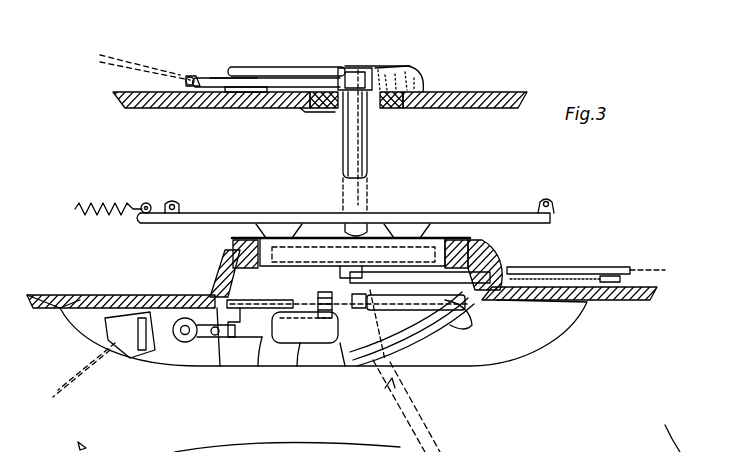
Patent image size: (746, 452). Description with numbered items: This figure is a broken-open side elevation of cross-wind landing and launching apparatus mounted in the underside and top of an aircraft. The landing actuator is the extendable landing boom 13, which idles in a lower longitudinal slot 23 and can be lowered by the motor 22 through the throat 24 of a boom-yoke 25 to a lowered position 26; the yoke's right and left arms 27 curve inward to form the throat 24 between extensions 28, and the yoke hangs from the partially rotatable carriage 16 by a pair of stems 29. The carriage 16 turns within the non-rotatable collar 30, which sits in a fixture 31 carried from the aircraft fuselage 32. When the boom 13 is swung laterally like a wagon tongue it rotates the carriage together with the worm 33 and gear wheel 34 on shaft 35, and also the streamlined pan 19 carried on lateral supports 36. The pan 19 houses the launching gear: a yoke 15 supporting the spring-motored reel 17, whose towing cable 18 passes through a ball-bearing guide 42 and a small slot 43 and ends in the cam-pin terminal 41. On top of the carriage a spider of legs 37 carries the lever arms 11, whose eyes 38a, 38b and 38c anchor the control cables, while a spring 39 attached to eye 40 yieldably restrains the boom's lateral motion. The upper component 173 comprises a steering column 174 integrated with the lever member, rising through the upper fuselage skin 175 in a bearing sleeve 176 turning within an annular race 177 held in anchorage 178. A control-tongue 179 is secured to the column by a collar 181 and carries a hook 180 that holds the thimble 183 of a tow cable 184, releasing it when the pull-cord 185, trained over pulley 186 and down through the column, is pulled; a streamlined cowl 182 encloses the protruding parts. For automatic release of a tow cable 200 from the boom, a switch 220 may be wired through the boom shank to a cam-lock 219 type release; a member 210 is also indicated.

The lever arm 11 is at (508, 215).
The landing boom 13 is at (560, 272).
The yoke 15 is at (263, 323).
The carriage 16 is at (390, 238).
The reel 17 is at (160, 338).
The towing cable 18 is at (177, 277).
The pan 19 is at (537, 328).
The motor 22 is at (307, 347).
The lower longitudinal slot 23 is at (583, 272).
The throat 24 is at (453, 317).
The boom-yoke 25 is at (450, 340).
The lowered boom position 26 is at (407, 413).
The yoke arms 27 is at (410, 357).
The yoke extensions 28 is at (407, 347).
The stems 29 is at (370, 297).
The collar 30 is at (233, 247).
The fixture 31 is at (487, 253).
The aircraft fuselage 32 is at (87, 293).
The worm 33 is at (328, 318).
The gear wheel 34 is at (340, 277).
The shaft 35 is at (268, 318).
The lateral supports 36 is at (218, 340).
The legs 37 is at (267, 227).
The eye 38a is at (547, 203).
The eye 38b is at (175, 207).
The eyes 38c is at (343, 203).
The spring 39 is at (110, 207).
The eye 40 is at (147, 203).
The terminal 41 is at (110, 357).
The ball-bearing guide 42 is at (122, 293).
The small slot 43 is at (130, 357).
The upper component 173 is at (402, 52).
The steering column 174 is at (357, 148).
The upper fuselage skin 175 is at (483, 97).
The bearing sleeve 176 is at (375, 100).
The annular race 177 is at (327, 108).
The anchorage 178 is at (313, 110).
The control-tongue 179 is at (290, 80).
The hook 180 is at (192, 78).
The collar 181 is at (380, 67).
The cowl 182 is at (433, 72).
The thimble 183 is at (203, 93).
The cable 184 is at (153, 68).
The pull-cord 185 is at (363, 187).
The pulley 186 is at (357, 67).
The cable 200 is at (660, 415).
The member 210 is at (625, 446).
The cam-lock 219 is at (691, 438).
The switch 220 is at (430, 450).